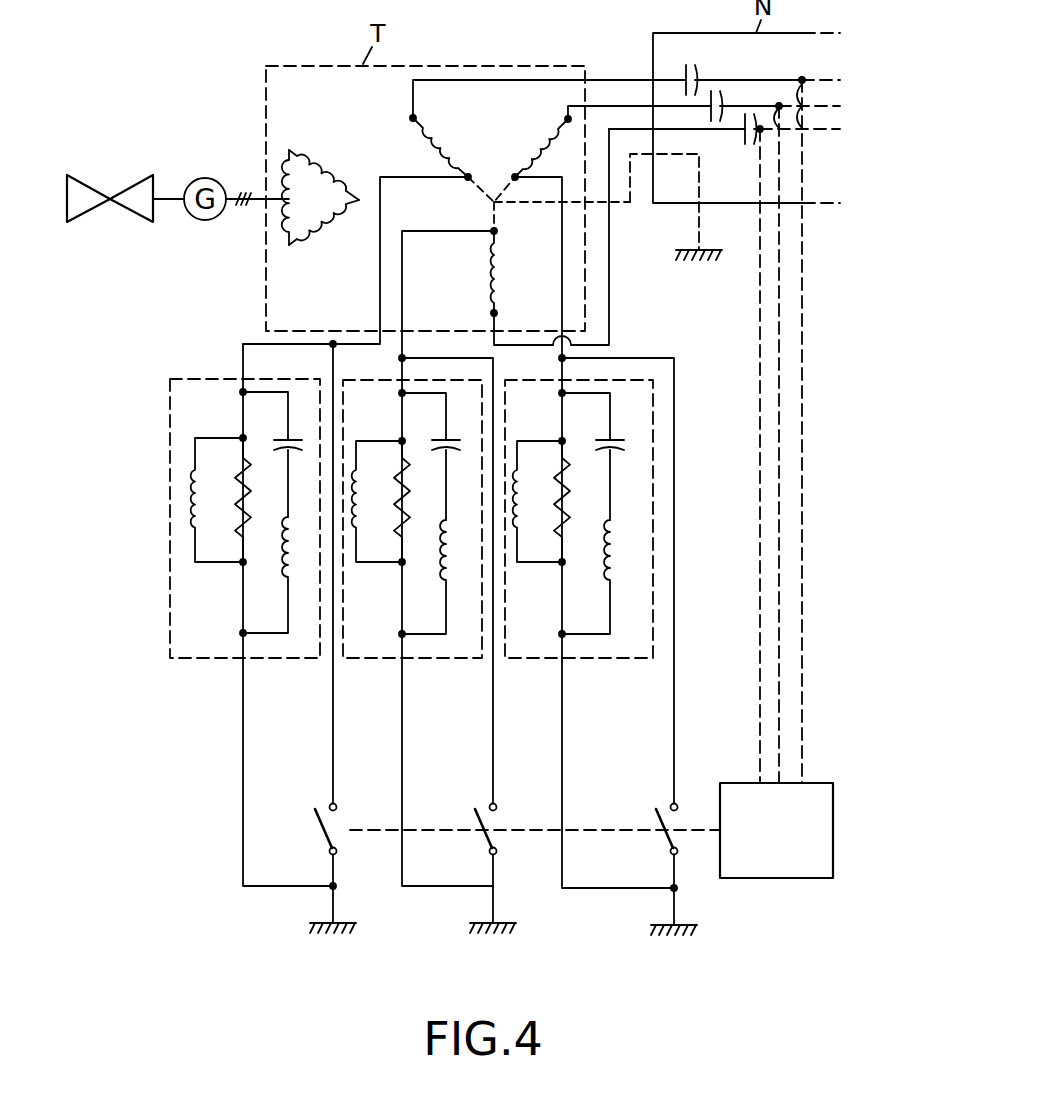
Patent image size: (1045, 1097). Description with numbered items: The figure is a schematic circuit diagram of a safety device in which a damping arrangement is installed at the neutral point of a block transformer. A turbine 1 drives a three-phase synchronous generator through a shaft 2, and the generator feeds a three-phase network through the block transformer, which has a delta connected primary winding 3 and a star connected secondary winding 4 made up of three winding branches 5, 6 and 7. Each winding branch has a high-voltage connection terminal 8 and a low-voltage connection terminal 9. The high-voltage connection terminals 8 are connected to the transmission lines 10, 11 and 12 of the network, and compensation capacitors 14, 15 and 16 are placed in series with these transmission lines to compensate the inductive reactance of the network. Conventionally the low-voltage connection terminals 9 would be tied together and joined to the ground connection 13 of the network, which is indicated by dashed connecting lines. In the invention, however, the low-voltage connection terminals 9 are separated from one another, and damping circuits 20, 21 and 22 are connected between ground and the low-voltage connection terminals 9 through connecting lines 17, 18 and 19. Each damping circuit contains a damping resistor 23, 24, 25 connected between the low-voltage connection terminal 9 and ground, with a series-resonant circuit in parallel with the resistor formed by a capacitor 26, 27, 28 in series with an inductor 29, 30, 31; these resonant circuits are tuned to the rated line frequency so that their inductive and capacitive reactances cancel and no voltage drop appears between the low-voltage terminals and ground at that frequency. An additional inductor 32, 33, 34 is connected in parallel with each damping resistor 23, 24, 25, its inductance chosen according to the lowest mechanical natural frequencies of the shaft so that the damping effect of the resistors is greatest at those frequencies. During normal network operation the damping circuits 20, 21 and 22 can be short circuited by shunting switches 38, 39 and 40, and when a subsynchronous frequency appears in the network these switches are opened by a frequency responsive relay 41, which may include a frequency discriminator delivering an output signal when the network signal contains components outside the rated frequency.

The turbine 1 is at (118, 256).
The shaft 2 is at (172, 204).
The delta connected primary winding 3 is at (322, 212).
The star connected secondary winding 4 is at (481, 166).
The winding branch 5 is at (437, 149).
The winding branch 6 is at (486, 264).
The winding branch 7 is at (541, 133).
The high-voltage connection terminal 8 is at (479, 207).
The low-voltage connection terminal 9 is at (543, 211).
The transmission line 10 is at (741, 80).
The transmission line 11 is at (745, 106).
The transmission line 12 is at (816, 130).
The ground connection 13 is at (700, 190).
The compensation capacitor 14 is at (685, 78).
The compensation capacitor 15 is at (710, 116).
The compensation capacitor 16 is at (747, 133).
The connecting line 17 is at (243, 358).
The connecting line 18 is at (402, 288).
The connecting line 19 is at (562, 288).
The damping circuit 20 is at (241, 544).
The damping circuit 21 is at (411, 545).
The damping circuit 22 is at (579, 545).
The damping resistor 23 is at (252, 506).
The damping resistor 24 is at (411, 506).
The damping resistor 25 is at (571, 506).
The capacitor 26 is at (283, 440).
The capacitor 27 is at (441, 440).
The capacitor 28 is at (606, 440).
The inductor 29 is at (284, 573).
The inductor 30 is at (440, 572).
The inductor 31 is at (604, 572).
The parallel inductor 32 is at (201, 475).
The parallel inductor 33 is at (360, 474).
The parallel inductor 34 is at (521, 474).
The shunting switch 38 is at (320, 869).
The shunting switch 39 is at (481, 869).
The shunting switch 40 is at (663, 870).
The frequency responsive relay 41 is at (784, 844).